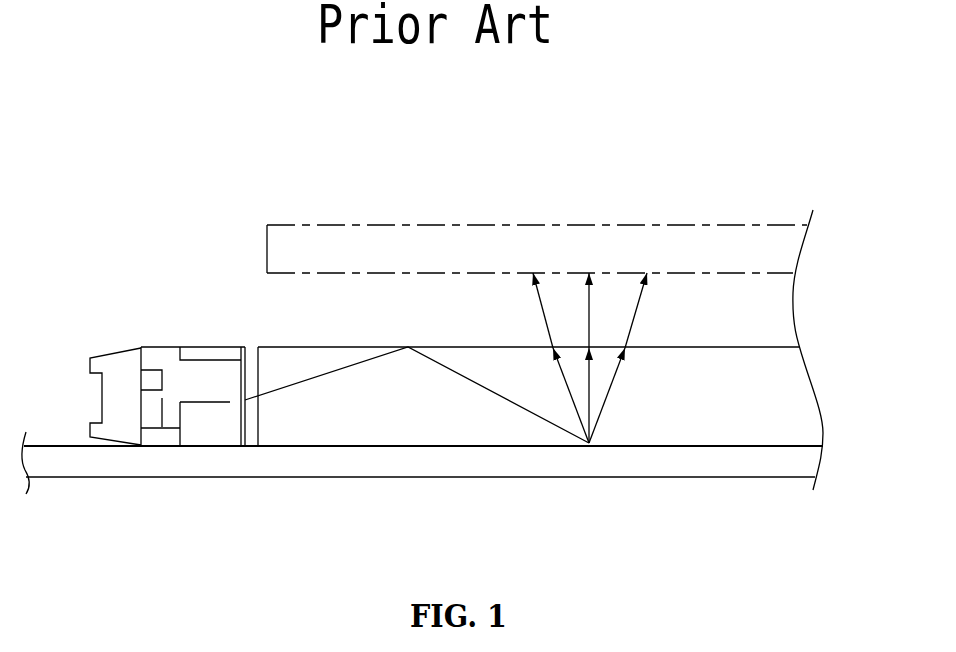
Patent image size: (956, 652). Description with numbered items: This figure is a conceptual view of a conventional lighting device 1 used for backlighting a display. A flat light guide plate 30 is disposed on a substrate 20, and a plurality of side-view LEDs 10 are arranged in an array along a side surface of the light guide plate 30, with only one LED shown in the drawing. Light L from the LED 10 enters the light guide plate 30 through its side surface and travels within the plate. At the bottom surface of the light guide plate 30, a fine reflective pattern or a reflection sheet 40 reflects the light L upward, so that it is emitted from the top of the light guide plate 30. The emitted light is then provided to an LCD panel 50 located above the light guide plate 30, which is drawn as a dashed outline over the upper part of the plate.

The lighting device 1 is at (250, 145).
The side-view LED 10 is at (176, 328).
The substrate 20 is at (513, 468).
The light guide plate 30 is at (795, 373).
The reflection sheet 40 is at (750, 443).
The LCD panel 50 is at (575, 225).
The light L is at (300, 385).